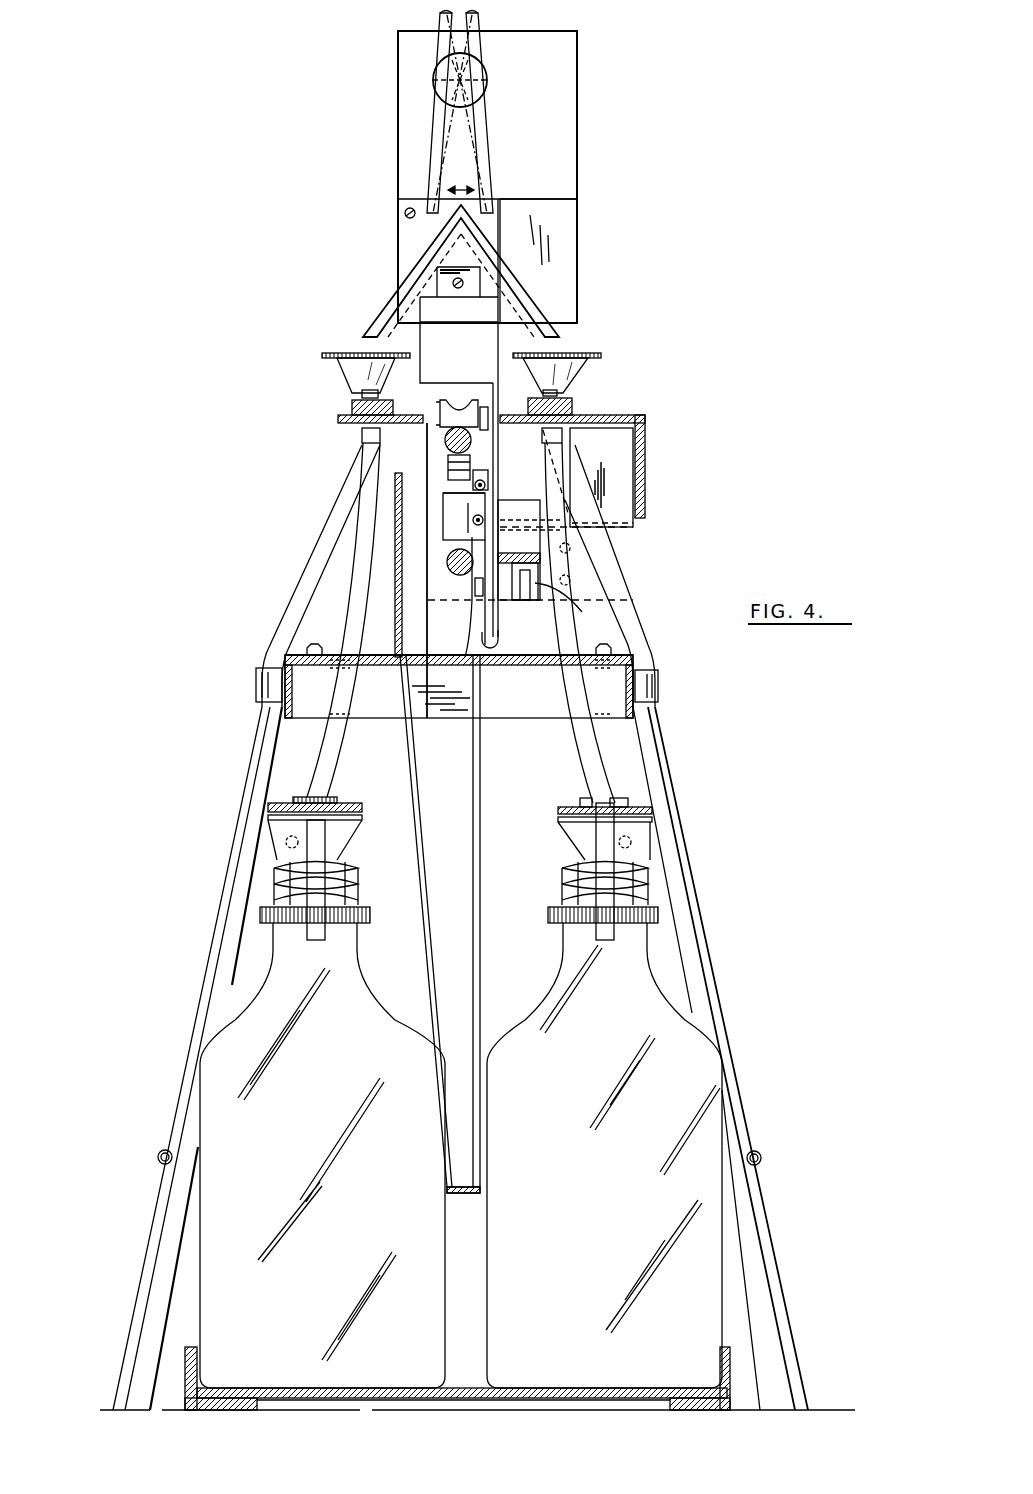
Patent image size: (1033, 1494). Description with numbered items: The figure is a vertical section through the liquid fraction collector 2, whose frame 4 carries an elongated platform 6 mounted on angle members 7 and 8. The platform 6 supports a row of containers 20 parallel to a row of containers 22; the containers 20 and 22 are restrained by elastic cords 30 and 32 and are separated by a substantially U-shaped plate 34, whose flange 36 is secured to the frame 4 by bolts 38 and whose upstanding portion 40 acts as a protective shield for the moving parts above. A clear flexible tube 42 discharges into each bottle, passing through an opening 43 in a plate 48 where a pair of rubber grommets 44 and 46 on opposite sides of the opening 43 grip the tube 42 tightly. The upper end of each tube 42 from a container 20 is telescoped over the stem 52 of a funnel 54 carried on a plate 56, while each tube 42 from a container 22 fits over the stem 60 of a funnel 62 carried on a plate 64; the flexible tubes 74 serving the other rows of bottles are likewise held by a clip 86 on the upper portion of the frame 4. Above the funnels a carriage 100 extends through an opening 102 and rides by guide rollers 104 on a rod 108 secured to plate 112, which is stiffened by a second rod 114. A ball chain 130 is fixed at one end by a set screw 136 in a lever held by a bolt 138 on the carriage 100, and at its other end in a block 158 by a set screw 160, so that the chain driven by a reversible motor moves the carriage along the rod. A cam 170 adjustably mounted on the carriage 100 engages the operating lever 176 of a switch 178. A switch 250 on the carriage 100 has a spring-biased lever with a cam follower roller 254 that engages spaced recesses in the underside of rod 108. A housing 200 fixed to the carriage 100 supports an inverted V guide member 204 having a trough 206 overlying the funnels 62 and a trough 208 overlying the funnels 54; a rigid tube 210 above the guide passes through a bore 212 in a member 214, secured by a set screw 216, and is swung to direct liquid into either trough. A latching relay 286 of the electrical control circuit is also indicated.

The liquid fraction collector 2 is at (738, 396).
The frame 4 is at (140, 1300).
The elongated platform 6 is at (458, 1386).
The angle member 7 is at (200, 1365).
The angle member 8 is at (718, 1363).
The containers 20 is at (625, 1097).
The containers 22 is at (335, 1097).
The elastic cord 30 is at (762, 1152).
The elastic cord 32 is at (162, 1150).
The U-shaped plate 34 is at (415, 812).
The flange 36 is at (528, 665).
The bolts 38 is at (318, 646).
The upstanding portion 40 is at (395, 481).
The flexible tube 42 is at (333, 748).
The opening 43 is at (618, 798).
The rubber grommet 44 is at (584, 799).
The rubber grommet 46 is at (592, 830).
The plate 48 is at (362, 808).
The stem 52 is at (562, 435).
The funnel 54 is at (588, 368).
The plate 56 is at (570, 405).
The stem 60 is at (362, 435).
The funnel 62 is at (342, 370).
The plate 64 is at (352, 407).
The flexible tube 74 is at (292, 598).
The clip 86 is at (256, 684).
The carriage 100 is at (498, 470).
The opening 102 is at (412, 426).
The guide roller 104 is at (445, 402).
The rod 108 is at (447, 447).
The plate 112 is at (466, 631).
The second rod 114 is at (470, 577).
The ball chain 130 is at (487, 485).
The set screw 136 is at (494, 641).
The bolt 138 is at (466, 660).
The block 158 is at (463, 548).
The set screw 160 is at (452, 500).
The cam 170 is at (534, 550).
The operating lever 176 is at (570, 598).
The switch 178 is at (523, 600).
The housing 200 is at (578, 135).
The inverted V guide member 204 is at (512, 240).
The trough 206 is at (383, 307).
The trough 208 is at (548, 307).
The rigid tube 210 is at (440, 160).
The bore 212 is at (482, 85).
The member 214 is at (478, 68).
The set screw 216 is at (434, 82).
The switch 250 is at (455, 512).
The cam follower roller 254 is at (450, 476).
The latching relay 286 is at (626, 490).